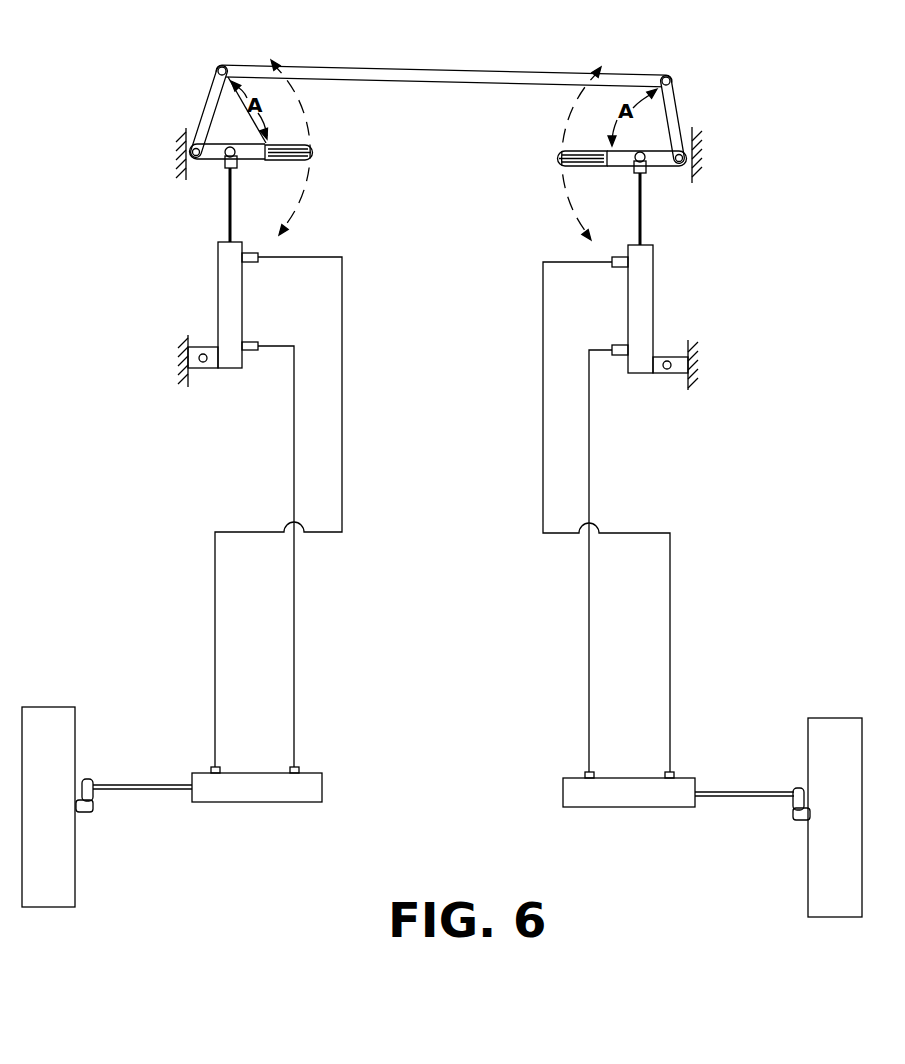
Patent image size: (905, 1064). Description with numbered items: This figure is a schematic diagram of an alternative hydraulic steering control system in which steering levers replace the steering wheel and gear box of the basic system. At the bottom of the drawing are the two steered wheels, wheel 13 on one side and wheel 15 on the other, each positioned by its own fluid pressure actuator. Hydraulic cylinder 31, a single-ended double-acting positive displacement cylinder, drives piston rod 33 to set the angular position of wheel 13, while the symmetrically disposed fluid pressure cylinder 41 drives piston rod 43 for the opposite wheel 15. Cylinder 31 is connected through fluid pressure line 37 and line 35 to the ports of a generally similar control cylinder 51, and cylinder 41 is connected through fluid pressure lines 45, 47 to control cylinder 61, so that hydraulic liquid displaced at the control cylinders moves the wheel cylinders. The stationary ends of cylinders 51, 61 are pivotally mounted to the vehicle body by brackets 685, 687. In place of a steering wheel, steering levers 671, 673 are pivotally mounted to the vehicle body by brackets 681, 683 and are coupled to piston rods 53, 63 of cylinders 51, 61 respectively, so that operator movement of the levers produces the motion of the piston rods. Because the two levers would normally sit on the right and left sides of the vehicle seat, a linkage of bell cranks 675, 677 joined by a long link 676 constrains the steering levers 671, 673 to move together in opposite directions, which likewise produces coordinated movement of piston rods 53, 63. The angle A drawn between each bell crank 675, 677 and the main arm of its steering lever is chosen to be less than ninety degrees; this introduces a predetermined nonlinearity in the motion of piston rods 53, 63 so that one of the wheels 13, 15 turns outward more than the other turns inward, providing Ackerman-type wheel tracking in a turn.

The right front steerable wheel 13 is at (75, 872).
The stub axle 15 is at (808, 878).
The hydraulic cylinder 31 is at (232, 803).
The piston rod 33 is at (150, 785).
The left hydraulic line 35 is at (296, 617).
The fluid pressure line 37 is at (217, 617).
The fluid pressure cylinder 41 is at (610, 808).
The piston rod 43 is at (757, 790).
The fluid pressure line 45 is at (589, 617).
The line 47 is at (670, 617).
The fluid pressure cylinder 51 is at (218, 270).
The piston rod 53 is at (230, 212).
The fluid pressure cylinder 61 is at (653, 273).
The piston rod 63 is at (641, 214).
The steering lever 671 is at (297, 163).
The steering lever 673 is at (578, 165).
The bell crank 675 is at (209, 93).
The long link 676 is at (383, 66).
The bell crank 677 is at (677, 97).
The bracket 681 is at (192, 165).
The bracket 683 is at (684, 165).
The bracket 685 is at (196, 371).
The bracket 687 is at (668, 376).